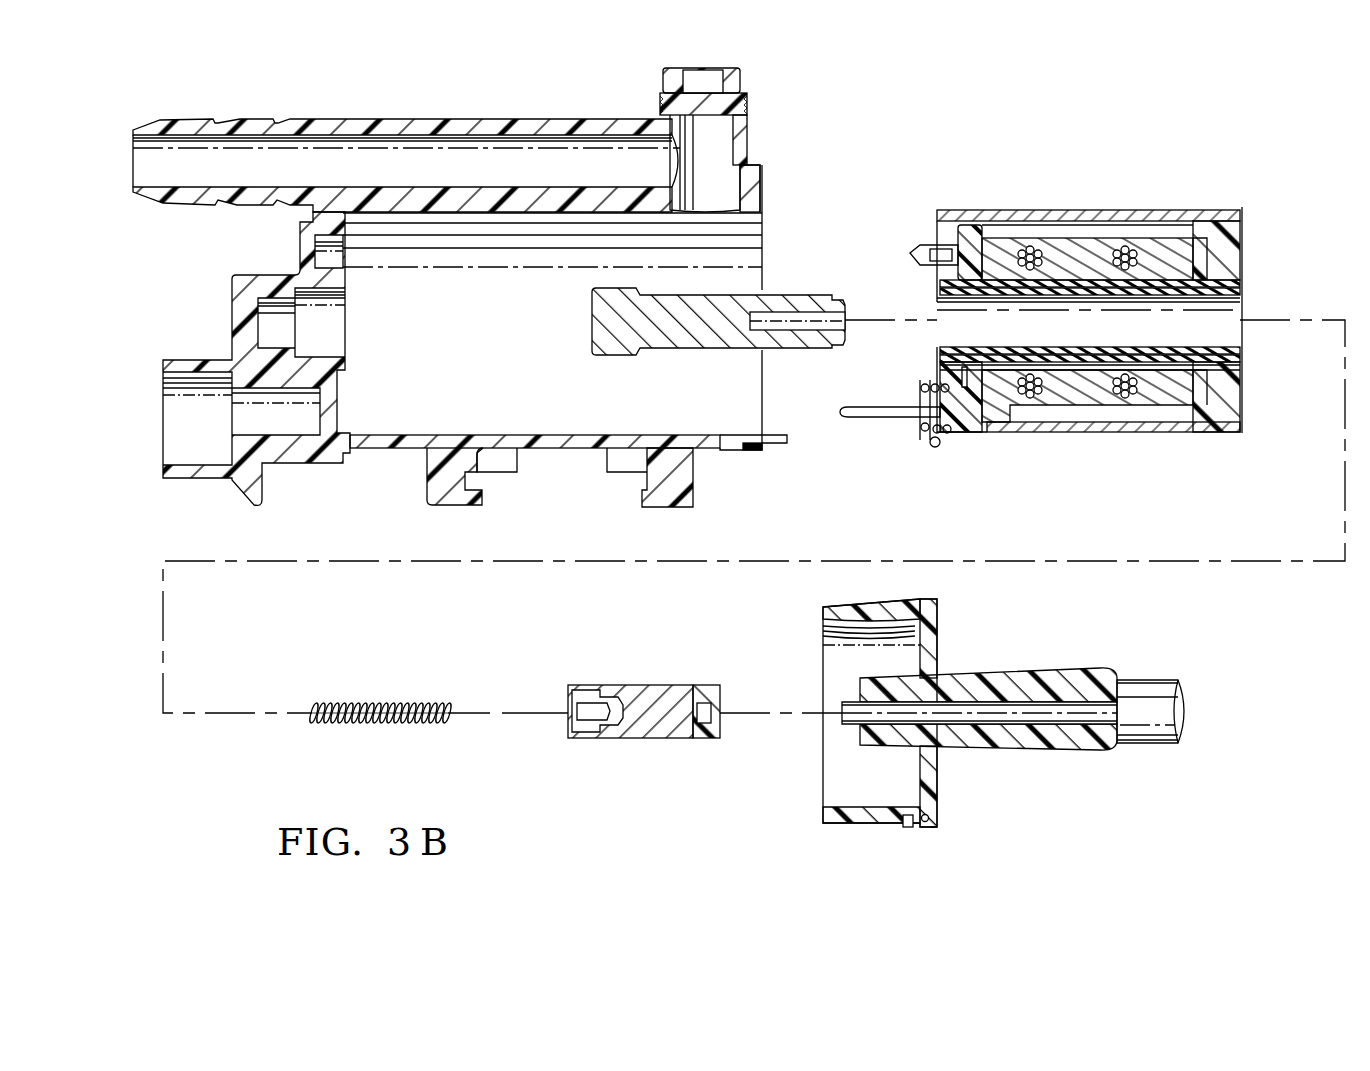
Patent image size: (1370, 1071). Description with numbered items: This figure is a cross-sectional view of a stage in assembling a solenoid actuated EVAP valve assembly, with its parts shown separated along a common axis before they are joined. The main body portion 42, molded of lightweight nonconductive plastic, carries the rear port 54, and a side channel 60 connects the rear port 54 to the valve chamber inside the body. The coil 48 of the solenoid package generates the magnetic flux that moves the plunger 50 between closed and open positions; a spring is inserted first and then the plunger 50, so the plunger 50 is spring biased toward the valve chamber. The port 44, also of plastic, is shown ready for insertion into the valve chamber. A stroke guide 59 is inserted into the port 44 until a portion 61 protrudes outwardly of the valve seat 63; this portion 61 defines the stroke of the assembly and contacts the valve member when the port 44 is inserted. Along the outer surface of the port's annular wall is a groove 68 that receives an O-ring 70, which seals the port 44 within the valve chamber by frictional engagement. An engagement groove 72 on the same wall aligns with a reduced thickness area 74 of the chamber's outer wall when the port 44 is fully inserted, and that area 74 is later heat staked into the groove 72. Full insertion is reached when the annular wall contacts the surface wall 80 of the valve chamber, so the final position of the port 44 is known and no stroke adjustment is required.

The main body portion 42 is at (428, 112).
The rear port 54 is at (170, 187).
The side channel 60 is at (346, 139).
The reduced thickness area 74 is at (730, 450).
The coil 48 is at (1012, 396).
The surface wall 80 is at (1241, 398).
The port 44 is at (967, 742).
The valve seat 63 is at (858, 688).
The portion 61 is at (843, 724).
The stroke guide 59 is at (1015, 722).
The plunger 50 is at (640, 735).
The engagement groove 72 is at (907, 828).
The groove 68 is at (925, 828).
The O-ring 70 is at (935, 828).